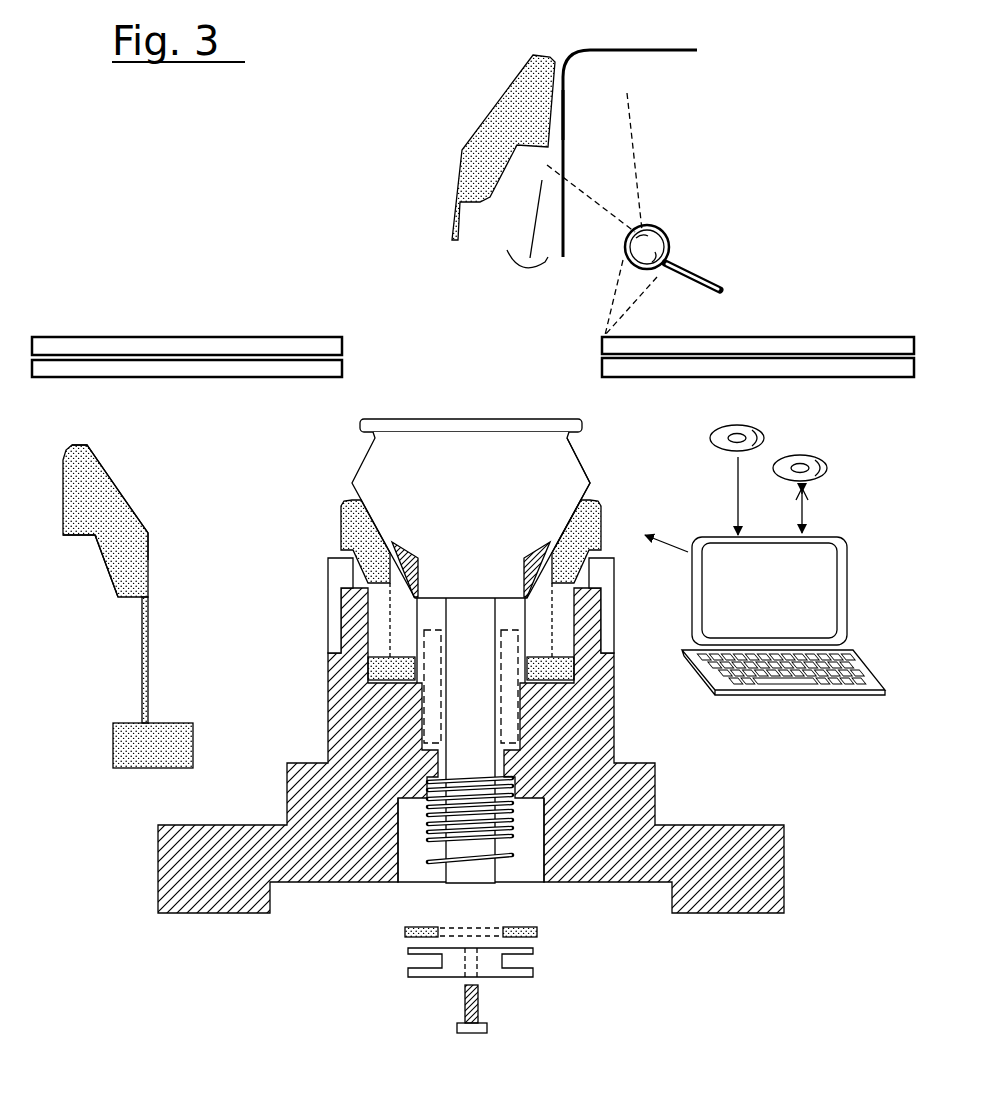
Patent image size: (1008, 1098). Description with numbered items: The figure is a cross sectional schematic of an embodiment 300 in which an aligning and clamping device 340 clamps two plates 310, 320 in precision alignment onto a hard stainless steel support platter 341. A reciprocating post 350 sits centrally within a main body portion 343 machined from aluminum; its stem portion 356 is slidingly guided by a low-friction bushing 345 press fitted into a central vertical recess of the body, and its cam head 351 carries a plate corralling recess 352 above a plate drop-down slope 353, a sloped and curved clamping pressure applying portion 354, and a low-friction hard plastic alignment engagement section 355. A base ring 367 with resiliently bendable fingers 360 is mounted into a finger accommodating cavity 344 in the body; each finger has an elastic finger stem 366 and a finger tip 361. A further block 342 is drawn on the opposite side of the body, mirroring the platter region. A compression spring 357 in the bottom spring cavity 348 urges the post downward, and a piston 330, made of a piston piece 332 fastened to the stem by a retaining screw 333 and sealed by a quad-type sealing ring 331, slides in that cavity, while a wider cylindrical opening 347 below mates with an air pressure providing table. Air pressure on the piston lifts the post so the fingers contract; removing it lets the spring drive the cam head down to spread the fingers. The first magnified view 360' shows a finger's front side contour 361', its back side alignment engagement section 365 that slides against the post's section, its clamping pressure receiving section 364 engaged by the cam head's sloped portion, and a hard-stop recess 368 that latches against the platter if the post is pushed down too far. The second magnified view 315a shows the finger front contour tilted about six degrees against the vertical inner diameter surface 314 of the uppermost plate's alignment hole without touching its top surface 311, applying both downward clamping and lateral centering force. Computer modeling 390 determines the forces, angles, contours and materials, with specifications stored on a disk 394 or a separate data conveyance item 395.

The embodiment 300 is at (190, 121).
The uppermost plate 310 is at (340, 337).
The top surface of the uppermost plate 311 is at (623, 50).
The vertical inner diameter surface 314 is at (563, 117).
The second magnified view 315a is at (703, 267).
The plate 320 is at (598, 368).
The piston 330 is at (446, 980).
The quad-type sealing ring 331 is at (392, 930).
The piston piece 332 is at (392, 962).
The retaining screw 333 is at (443, 997).
The aligning and clamping device 340 is at (471, 776).
The support platter 341 is at (327, 568).
The right side block 342 is at (612, 600).
The main body portion 343 is at (656, 768).
The finger accommodating cavity 344 is at (425, 623).
The low-friction bushing 345 is at (531, 623).
The wider cylindrical opening 347 is at (562, 908).
The spring cavity 348 is at (437, 876).
The reciprocating post 350 is at (513, 629).
The cam head 351 is at (484, 461).
The plate corralling recess 352 is at (577, 438).
The plate drop-down slope 353 is at (582, 458).
The clamping pressure applying portion 354 is at (550, 523).
The alignment engagement section 355 is at (523, 537).
The stem portion 356 is at (484, 671).
The compression spring 357 is at (465, 777).
The fingers 360 is at (613, 537).
The first magnified view of finger 360' is at (155, 590).
The finger tips 361 is at (327, 541).
The front side contour 361' is at (101, 504).
The clamping pressure receiving section 364 is at (95, 448).
The alignment engagement section 365 is at (148, 535).
The finger stems 366 is at (148, 640).
The base ring 367 is at (167, 722).
The hard-stop recess 368 is at (92, 542).
The computer modeling 390 is at (754, 627).
The disk 394 is at (800, 483).
The data conveyance item 395 is at (737, 469).